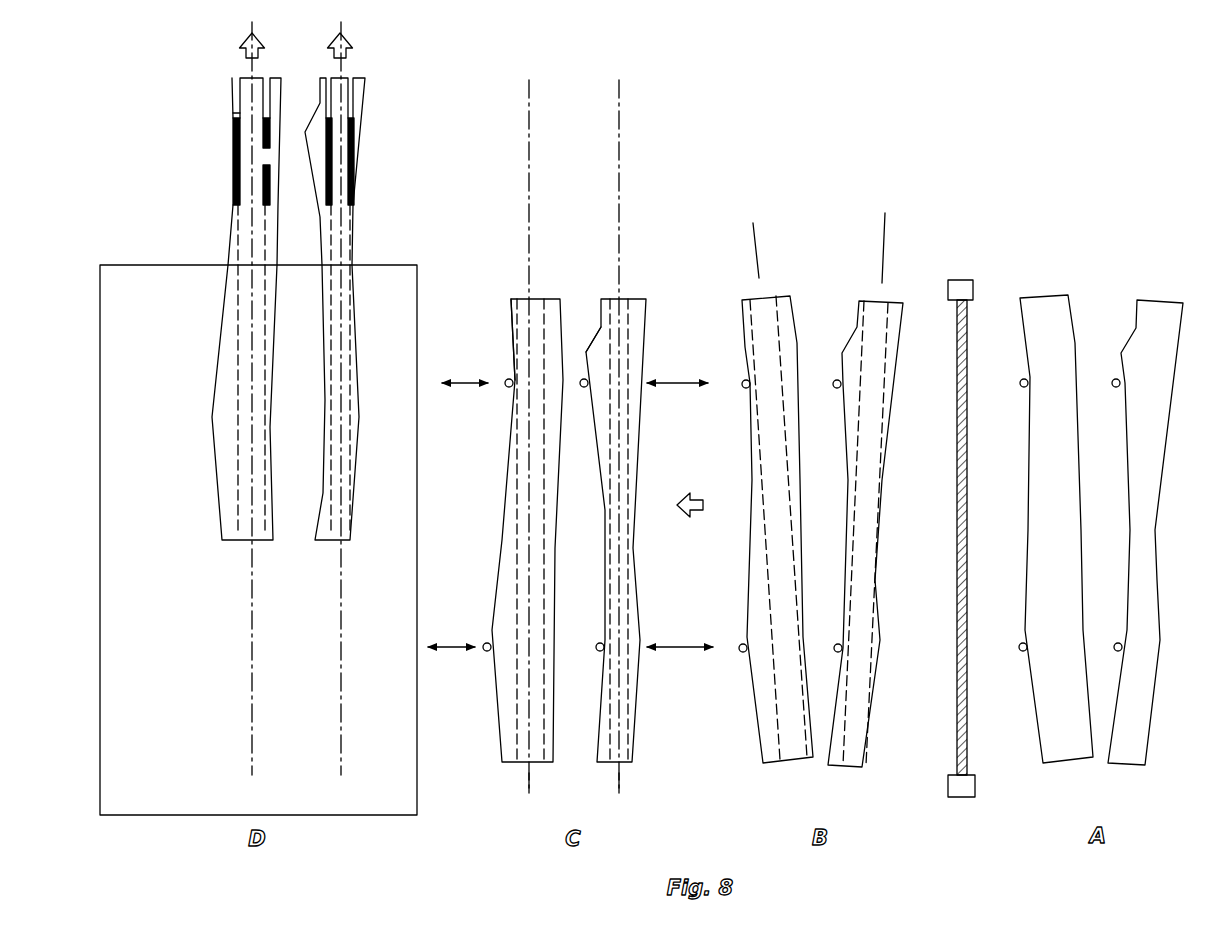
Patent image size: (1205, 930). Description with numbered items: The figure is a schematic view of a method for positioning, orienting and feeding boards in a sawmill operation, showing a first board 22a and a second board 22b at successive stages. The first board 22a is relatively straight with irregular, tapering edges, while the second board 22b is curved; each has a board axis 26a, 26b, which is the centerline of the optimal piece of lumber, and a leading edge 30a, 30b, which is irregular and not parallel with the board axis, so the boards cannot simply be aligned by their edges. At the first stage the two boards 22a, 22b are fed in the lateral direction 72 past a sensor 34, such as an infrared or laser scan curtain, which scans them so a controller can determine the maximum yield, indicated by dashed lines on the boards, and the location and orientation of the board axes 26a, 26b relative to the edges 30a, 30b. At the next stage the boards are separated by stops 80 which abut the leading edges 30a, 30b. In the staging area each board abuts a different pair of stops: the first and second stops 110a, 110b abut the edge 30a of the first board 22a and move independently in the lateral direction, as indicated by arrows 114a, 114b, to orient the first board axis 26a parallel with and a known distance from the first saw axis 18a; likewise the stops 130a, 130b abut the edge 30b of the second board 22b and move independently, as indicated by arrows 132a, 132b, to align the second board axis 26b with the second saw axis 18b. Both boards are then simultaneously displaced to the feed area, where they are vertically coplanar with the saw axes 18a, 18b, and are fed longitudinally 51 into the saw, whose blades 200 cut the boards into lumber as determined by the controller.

The longitudinal feed direction 51 is at (352, 47).
The saw blades 200 is at (355, 130).
The first saw axis 18a is at (529, 113).
The second saw axis 18b is at (619, 108).
The first board 22a is at (552, 296).
The second board 22b is at (632, 297).
The first leading edge 30a is at (511, 305).
The second leading edge 30b is at (600, 330).
The first board axis 26a is at (757, 250).
The second board axis 26b is at (882, 255).
The arrow indicating movement of second stop of first pair 114b is at (470, 378).
The second stop of first pair of stops 110b is at (505, 387).
The arrow indicating movement of first stop of first pair 114a is at (452, 652).
The first stop of first pair of stops 110a is at (483, 643).
The second stop of second pair of stops 130b is at (583, 390).
The first stop of second pair of stops 130a is at (600, 652).
The arrow indicating movement of second stop of second pair 132b is at (677, 380).
The arrow indicating movement of first stop of second pair 132a is at (675, 651).
The lateral direction 72 is at (700, 515).
The stops 80 is at (835, 380).
The sensor 34 is at (960, 280).